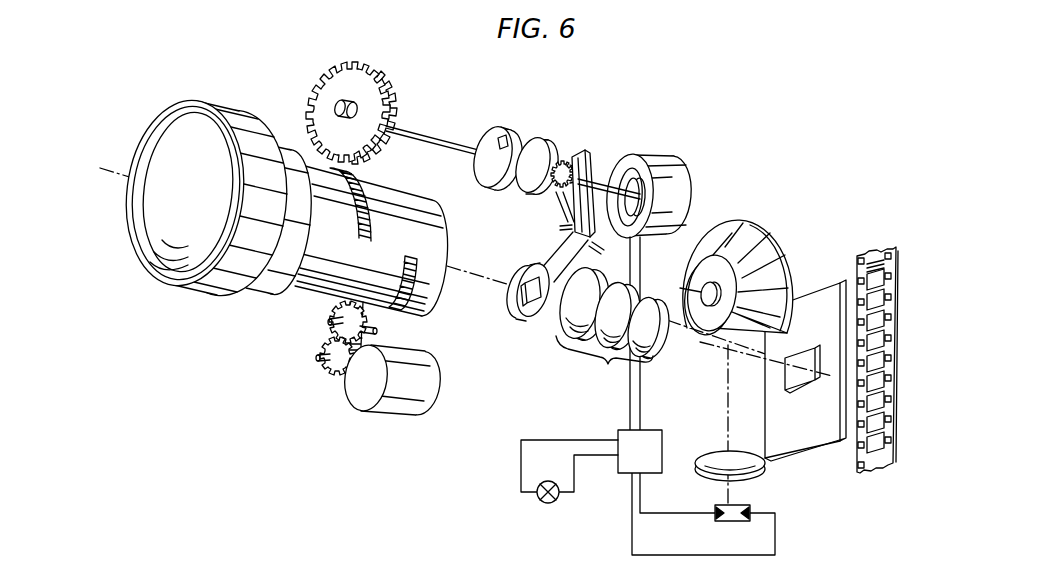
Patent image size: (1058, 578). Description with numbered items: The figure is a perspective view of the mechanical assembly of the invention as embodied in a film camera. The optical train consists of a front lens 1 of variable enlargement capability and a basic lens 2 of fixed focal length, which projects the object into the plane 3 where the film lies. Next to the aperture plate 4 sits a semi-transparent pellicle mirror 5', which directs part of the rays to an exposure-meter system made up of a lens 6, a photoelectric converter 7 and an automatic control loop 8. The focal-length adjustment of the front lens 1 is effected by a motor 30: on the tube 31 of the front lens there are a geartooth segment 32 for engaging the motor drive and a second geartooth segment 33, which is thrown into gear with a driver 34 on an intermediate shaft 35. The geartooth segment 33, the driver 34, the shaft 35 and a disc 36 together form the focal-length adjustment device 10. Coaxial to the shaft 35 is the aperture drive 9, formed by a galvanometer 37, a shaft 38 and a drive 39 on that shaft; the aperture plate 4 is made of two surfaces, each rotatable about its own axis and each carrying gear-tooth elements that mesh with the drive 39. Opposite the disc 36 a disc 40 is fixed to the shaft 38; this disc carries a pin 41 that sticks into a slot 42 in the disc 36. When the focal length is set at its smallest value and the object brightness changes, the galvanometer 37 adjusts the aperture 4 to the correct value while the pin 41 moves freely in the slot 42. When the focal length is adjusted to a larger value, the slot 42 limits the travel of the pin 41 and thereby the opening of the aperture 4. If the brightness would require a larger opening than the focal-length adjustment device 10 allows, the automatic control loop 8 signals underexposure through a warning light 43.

The front lens 1 is at (257, 305).
The basic lens 2 is at (614, 324).
The plane 3 is at (875, 260).
The aperture plate 4 is at (526, 332).
The pellicle mirror 5' is at (736, 259).
The lens 6 is at (765, 470).
The photoelectric converter 7 is at (747, 507).
The automatic control loop 8 is at (696, 396).
The aperture drive 9 is at (613, 120).
The focal-length adjustment device 10 is at (405, 74).
The motor 30 is at (397, 403).
The tube 31 is at (320, 267).
The geartooth segment 32 is at (392, 302).
The geartooth segment 33 is at (366, 182).
The driver 34 is at (351, 97).
The intermediate shaft 35 is at (426, 130).
The disc 36 is at (486, 137).
The galvanometer 37 is at (667, 173).
The shaft 38 is at (600, 183).
The drive 39 is at (560, 160).
The disc 40 is at (537, 142).
The pin 41 is at (528, 150).
The slot 42 is at (502, 138).
The warning light 43 is at (541, 495).